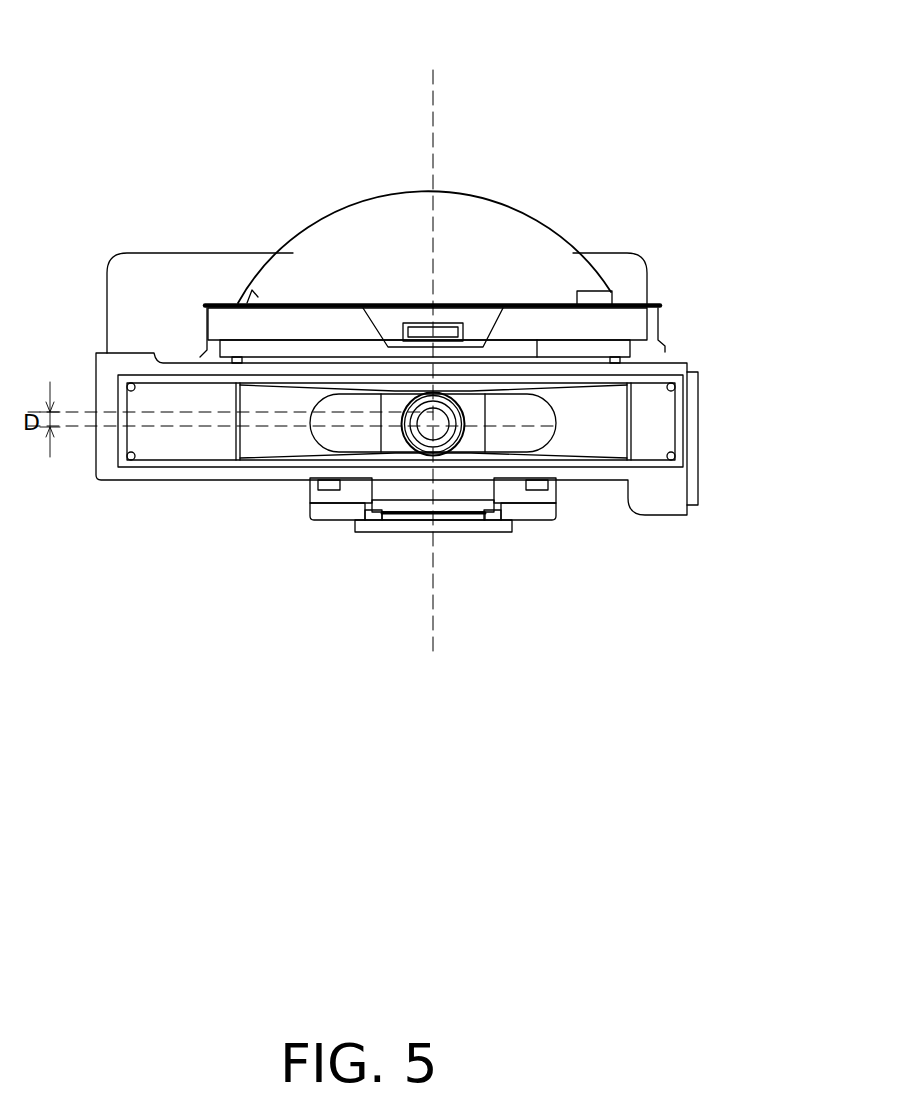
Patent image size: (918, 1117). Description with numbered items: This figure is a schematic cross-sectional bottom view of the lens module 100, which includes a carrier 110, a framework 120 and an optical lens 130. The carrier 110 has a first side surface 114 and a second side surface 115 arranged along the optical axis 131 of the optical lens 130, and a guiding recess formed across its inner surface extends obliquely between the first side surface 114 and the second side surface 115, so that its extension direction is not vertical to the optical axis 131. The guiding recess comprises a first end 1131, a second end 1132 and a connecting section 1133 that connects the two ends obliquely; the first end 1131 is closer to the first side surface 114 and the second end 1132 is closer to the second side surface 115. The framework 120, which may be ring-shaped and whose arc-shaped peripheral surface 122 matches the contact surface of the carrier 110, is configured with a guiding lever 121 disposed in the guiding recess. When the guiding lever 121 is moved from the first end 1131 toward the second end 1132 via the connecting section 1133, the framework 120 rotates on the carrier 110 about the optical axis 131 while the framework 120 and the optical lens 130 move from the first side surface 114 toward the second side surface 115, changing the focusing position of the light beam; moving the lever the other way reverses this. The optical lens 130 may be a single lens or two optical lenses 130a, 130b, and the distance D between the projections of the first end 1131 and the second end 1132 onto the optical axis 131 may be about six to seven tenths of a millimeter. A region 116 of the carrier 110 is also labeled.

The lens module 100 is at (62, 33).
The carrier 110 is at (688, 427).
The first side surface 114 is at (592, 481).
The second side surface 115 is at (677, 361).
The side portion 116 is at (672, 482).
The first end 1131 is at (562, 420).
The second end 1132 is at (310, 418).
The connecting section 1133 is at (461, 443).
The framework 120 is at (230, 322).
The guiding lever 121 is at (463, 407).
The peripheral surface 122 is at (337, 438).
The optical lens 130 is at (424, 377).
The optical lens 130a is at (390, 522).
The optical lens 130b is at (362, 223).
The optical axis 131 is at (433, 79).